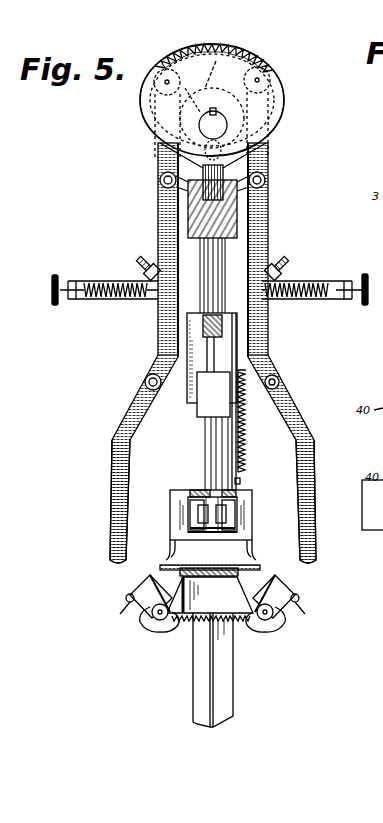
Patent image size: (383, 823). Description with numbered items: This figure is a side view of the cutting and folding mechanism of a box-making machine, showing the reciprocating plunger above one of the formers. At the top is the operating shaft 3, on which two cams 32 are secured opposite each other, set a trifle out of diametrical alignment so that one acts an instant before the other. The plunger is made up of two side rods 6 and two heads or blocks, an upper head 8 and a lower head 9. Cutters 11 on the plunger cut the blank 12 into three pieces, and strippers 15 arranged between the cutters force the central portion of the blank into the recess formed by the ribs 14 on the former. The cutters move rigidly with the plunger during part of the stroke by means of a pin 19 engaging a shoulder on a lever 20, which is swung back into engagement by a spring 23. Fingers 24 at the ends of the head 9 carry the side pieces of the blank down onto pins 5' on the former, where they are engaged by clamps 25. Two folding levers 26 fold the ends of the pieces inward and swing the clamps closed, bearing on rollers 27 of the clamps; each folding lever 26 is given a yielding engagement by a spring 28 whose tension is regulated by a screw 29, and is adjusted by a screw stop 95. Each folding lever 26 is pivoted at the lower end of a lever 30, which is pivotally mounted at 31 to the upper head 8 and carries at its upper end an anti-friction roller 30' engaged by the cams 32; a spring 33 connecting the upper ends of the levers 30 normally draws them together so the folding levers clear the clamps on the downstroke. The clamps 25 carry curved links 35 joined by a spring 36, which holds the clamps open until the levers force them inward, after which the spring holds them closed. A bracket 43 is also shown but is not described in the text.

The operating shaft 3 is at (216, 125).
The side rods 6 is at (219, 275).
The upper head 8 is at (200, 218).
The head 9 is at (194, 490).
The cutters 11 is at (238, 519).
The blank 12 is at (262, 563).
The ribs 14 is at (172, 570).
The strippers 15 is at (226, 535).
The pin 19 is at (241, 483).
The lever 20 is at (240, 460).
The spring 23 is at (251, 421).
The fingers 24 is at (168, 545).
The clamps 25 is at (126, 599).
The levers 26 is at (110, 497).
The rollers 27 is at (120, 616).
The spring 28 is at (118, 286).
The screws 29 is at (209, 281).
The lever 30 is at (213, 351).
The anti-friction roller 30' is at (203, 103).
The pivot 31 is at (160, 181).
The cams 32 is at (236, 44).
The spring 33 is at (210, 42).
The curved links 35 is at (168, 640).
The spring 36 is at (234, 622).
The bracket 43 is at (212, 590).
The pins 5' is at (219, 595).
The screw stops 95 is at (150, 262).